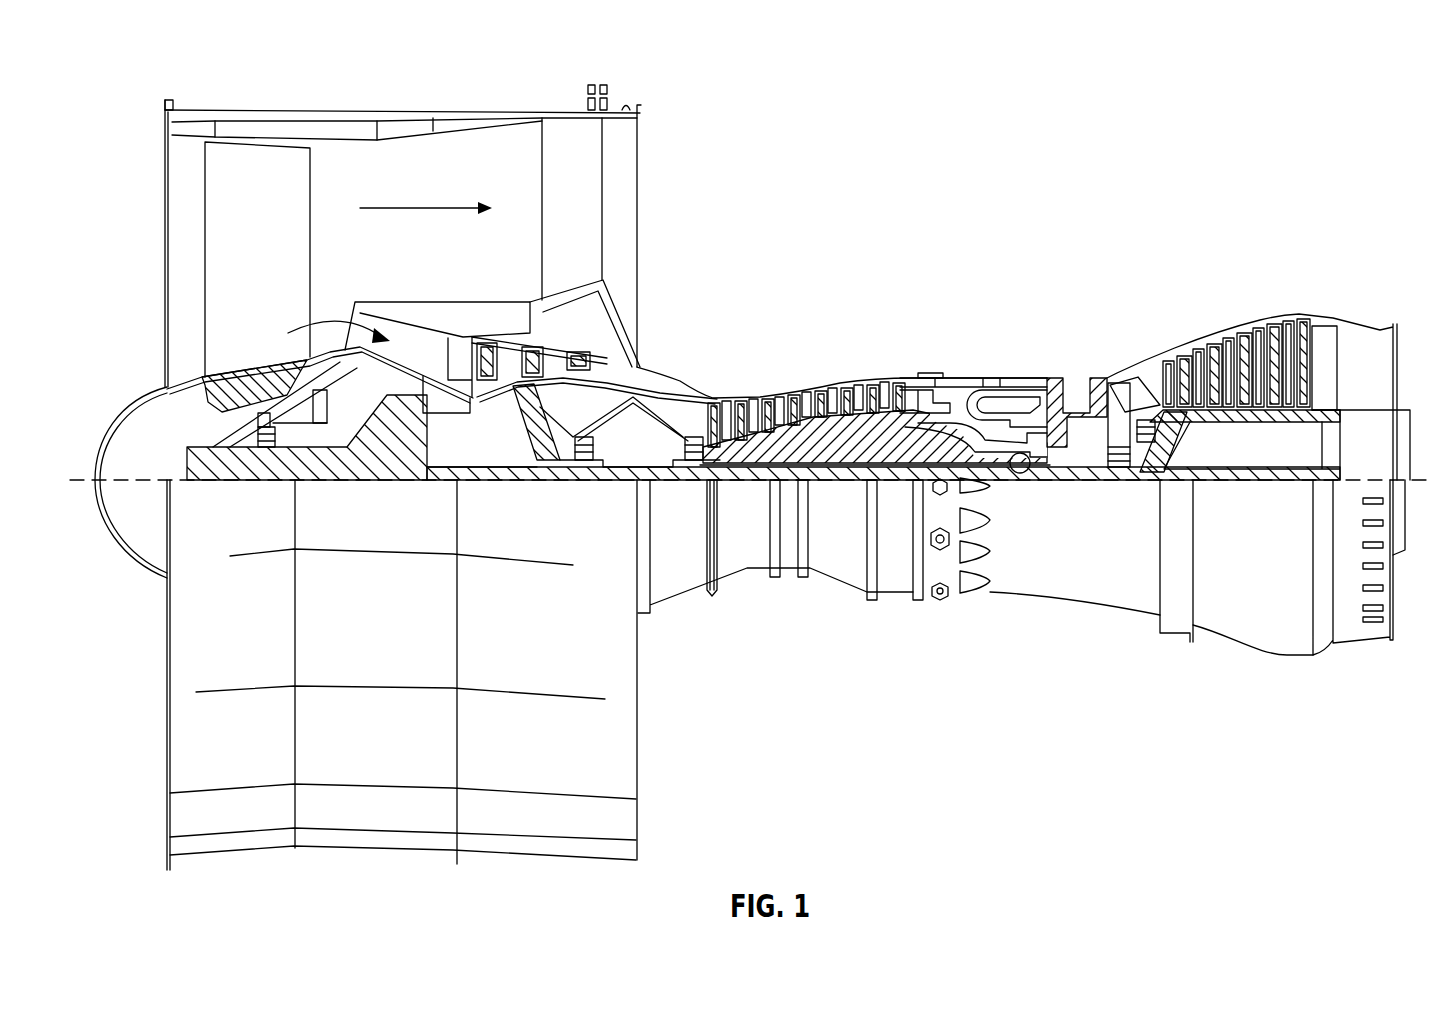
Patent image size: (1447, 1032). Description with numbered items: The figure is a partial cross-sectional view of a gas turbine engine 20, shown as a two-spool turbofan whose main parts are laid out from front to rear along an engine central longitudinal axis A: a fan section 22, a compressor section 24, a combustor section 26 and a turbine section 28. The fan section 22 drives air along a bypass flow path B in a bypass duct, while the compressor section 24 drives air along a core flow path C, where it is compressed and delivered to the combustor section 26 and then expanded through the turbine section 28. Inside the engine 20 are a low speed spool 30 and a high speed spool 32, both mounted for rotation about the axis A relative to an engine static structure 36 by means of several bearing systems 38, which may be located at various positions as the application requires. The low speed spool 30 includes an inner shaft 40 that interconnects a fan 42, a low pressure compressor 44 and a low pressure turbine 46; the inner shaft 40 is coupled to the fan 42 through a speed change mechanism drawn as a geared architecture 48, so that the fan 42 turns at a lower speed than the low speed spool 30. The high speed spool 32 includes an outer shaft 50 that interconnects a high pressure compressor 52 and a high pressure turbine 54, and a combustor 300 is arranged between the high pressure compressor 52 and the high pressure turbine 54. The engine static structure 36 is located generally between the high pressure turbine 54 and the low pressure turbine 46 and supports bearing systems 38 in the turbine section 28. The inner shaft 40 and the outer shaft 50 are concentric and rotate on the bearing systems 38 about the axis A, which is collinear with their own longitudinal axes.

The gas turbine engine 20 is at (1293, 163).
The fan section 22 is at (272, 100).
The compressor section 24 is at (840, 321).
The combustor section 26 is at (996, 325).
The turbine section 28 is at (1205, 295).
The low speed spool 30 is at (858, 488).
The high speed spool 32 is at (920, 397).
The engine static structure 36 is at (898, 605).
The bearing systems 38 is at (268, 448).
The inner shaft 40 is at (652, 472).
The fan 42 is at (282, 241).
The low pressure compressor 44 is at (553, 358).
The low pressure turbine 46 is at (1246, 337).
The geared architecture 48 is at (398, 465).
The outer shaft 50 is at (1022, 472).
The high pressure compressor 52 is at (815, 397).
The high pressure turbine 54 is at (1083, 378).
The combustor 300 is at (1003, 397).
The engine central longitudinal axis A is at (1418, 478).
The bypass flow path B is at (432, 208).
The core flow path C is at (293, 322).